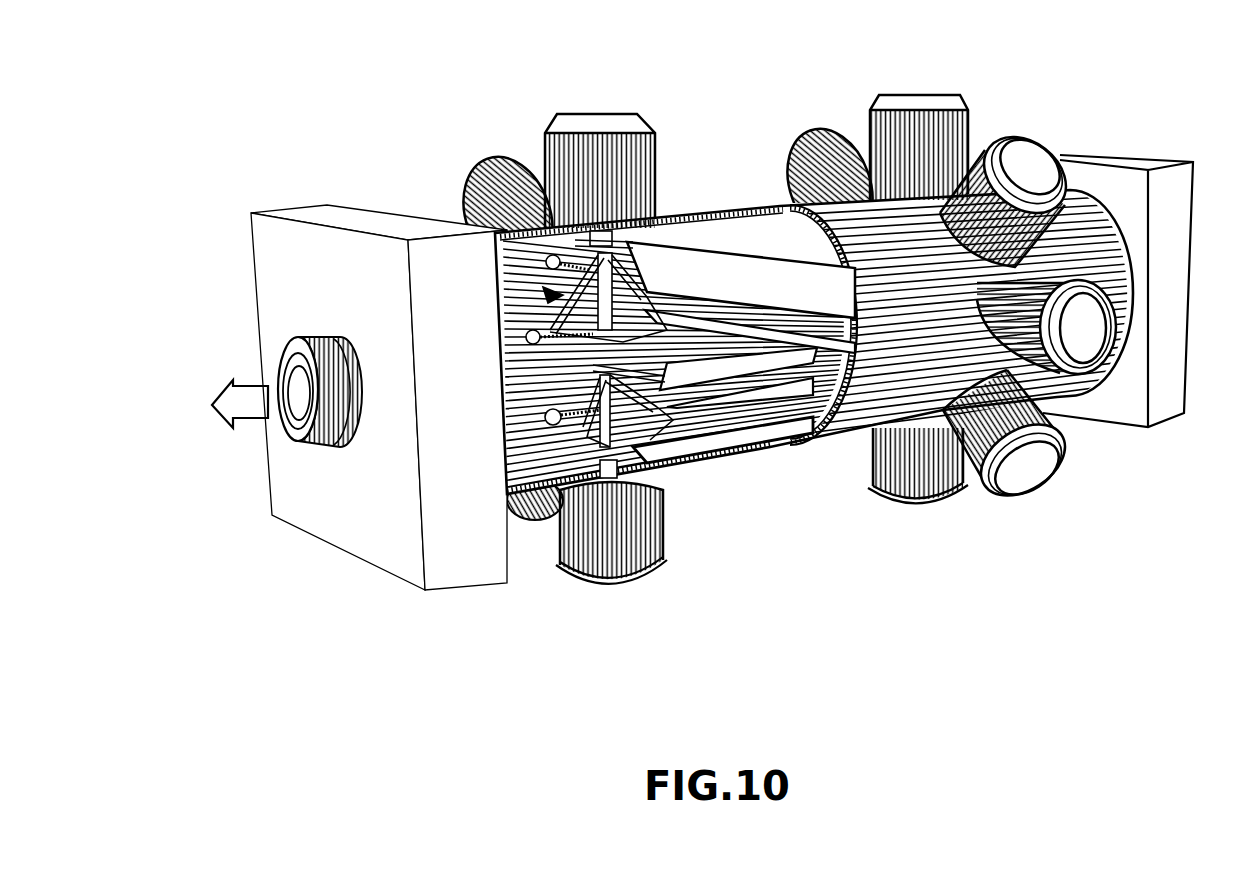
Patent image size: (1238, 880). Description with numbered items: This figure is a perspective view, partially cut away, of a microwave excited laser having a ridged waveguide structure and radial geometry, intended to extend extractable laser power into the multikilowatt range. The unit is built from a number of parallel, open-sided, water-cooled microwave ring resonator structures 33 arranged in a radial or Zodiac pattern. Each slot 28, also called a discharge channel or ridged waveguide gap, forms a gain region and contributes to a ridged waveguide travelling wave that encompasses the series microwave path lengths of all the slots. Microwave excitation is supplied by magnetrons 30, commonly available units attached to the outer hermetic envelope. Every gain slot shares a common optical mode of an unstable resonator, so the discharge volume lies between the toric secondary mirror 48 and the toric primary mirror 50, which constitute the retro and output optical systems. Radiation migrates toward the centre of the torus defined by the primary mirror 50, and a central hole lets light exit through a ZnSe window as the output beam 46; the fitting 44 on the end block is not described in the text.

The discharge channel 28 is at (713, 272).
The magnetron 30 is at (667, 153).
The microwave ring resonator structure 33 is at (723, 440).
The ring fitting 44 is at (335, 447).
The output beam 46 is at (252, 378).
The toric secondary mirror 48 is at (1145, 153).
The toric primary mirror 50 is at (290, 197).